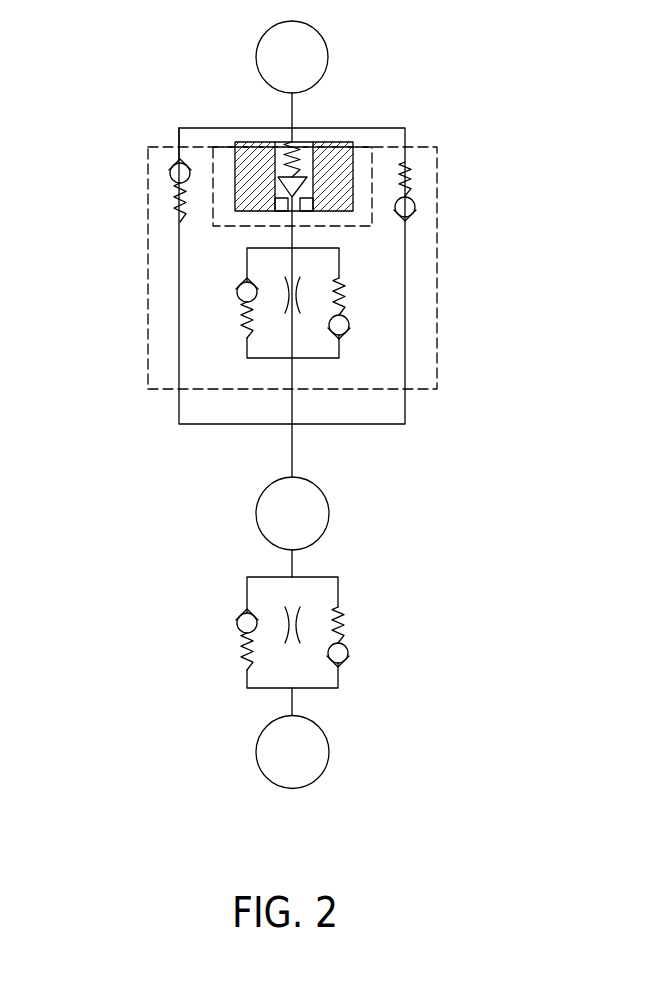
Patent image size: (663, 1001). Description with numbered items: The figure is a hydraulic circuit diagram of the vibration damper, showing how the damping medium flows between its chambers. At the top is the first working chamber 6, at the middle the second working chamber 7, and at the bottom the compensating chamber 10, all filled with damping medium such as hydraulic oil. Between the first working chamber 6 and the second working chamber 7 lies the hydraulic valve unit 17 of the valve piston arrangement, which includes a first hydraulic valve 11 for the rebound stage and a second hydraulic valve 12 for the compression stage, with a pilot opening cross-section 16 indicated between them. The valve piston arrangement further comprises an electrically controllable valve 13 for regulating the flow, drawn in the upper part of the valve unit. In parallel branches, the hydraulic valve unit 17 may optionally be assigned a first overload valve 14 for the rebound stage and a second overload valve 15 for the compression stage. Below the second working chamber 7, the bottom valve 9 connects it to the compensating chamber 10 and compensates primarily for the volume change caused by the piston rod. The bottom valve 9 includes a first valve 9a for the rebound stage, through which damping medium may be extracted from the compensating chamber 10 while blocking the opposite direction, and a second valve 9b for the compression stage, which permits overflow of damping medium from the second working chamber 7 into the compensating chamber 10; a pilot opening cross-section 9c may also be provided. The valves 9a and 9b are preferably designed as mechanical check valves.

The first working chamber 6 is at (283, 71).
The second working chamber 7 is at (284, 526).
The compensating chamber 10 is at (308, 765).
The bottom valve 9 is at (345, 577).
The first valve 9a is at (348, 653).
The second valve 9b is at (237, 623).
The pilot opening cross-section 9c is at (292, 634).
The first hydraulic valve 11 is at (237, 291).
The second hydraulic valve 12 is at (347, 324).
The electrically controllable valve 13 is at (338, 155).
The first overload valve 14 is at (168, 175).
The second overload valve 15 is at (413, 200).
The pilot opening cross-section 16 is at (292, 309).
The hydraulic valve unit 17 is at (437, 270).